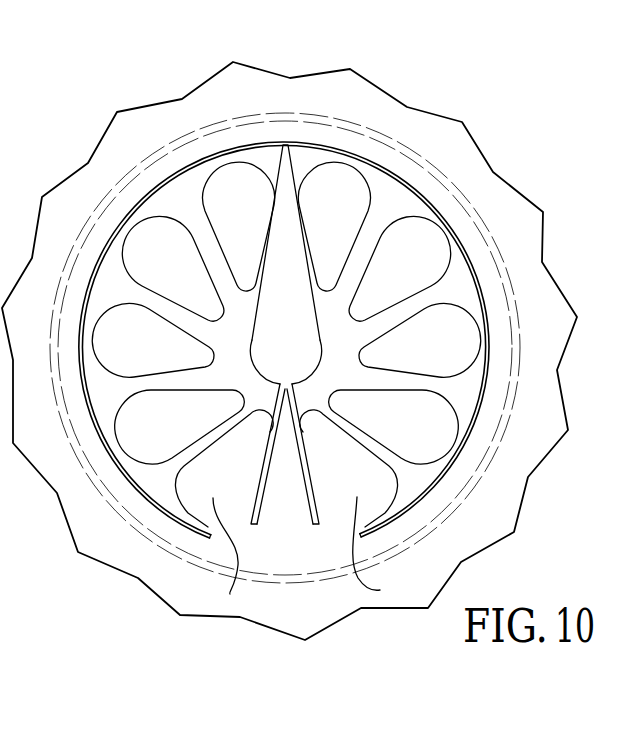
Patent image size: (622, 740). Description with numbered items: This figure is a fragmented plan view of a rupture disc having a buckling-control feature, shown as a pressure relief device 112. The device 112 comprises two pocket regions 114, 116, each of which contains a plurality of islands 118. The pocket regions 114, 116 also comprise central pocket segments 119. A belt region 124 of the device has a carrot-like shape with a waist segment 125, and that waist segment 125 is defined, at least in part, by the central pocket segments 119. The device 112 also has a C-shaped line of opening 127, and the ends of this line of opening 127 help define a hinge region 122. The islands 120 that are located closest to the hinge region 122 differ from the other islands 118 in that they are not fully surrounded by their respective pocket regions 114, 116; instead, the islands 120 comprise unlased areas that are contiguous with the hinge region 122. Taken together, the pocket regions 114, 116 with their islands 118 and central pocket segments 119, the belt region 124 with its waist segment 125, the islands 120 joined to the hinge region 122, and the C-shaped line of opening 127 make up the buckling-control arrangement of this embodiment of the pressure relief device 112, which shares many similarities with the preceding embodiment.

The pressure relief device 112 is at (487, 97).
The pocket region 114 is at (464, 392).
The pocket region 116 is at (107, 393).
The islands 118 is at (118, 333).
The central pocket segments 119 is at (340, 323).
The islands 120 is at (230, 594).
The hinge region 122 is at (287, 547).
The belt region 124 is at (287, 342).
The waist segment 125 is at (291, 389).
The C-shaped line of opening 127 is at (157, 507).